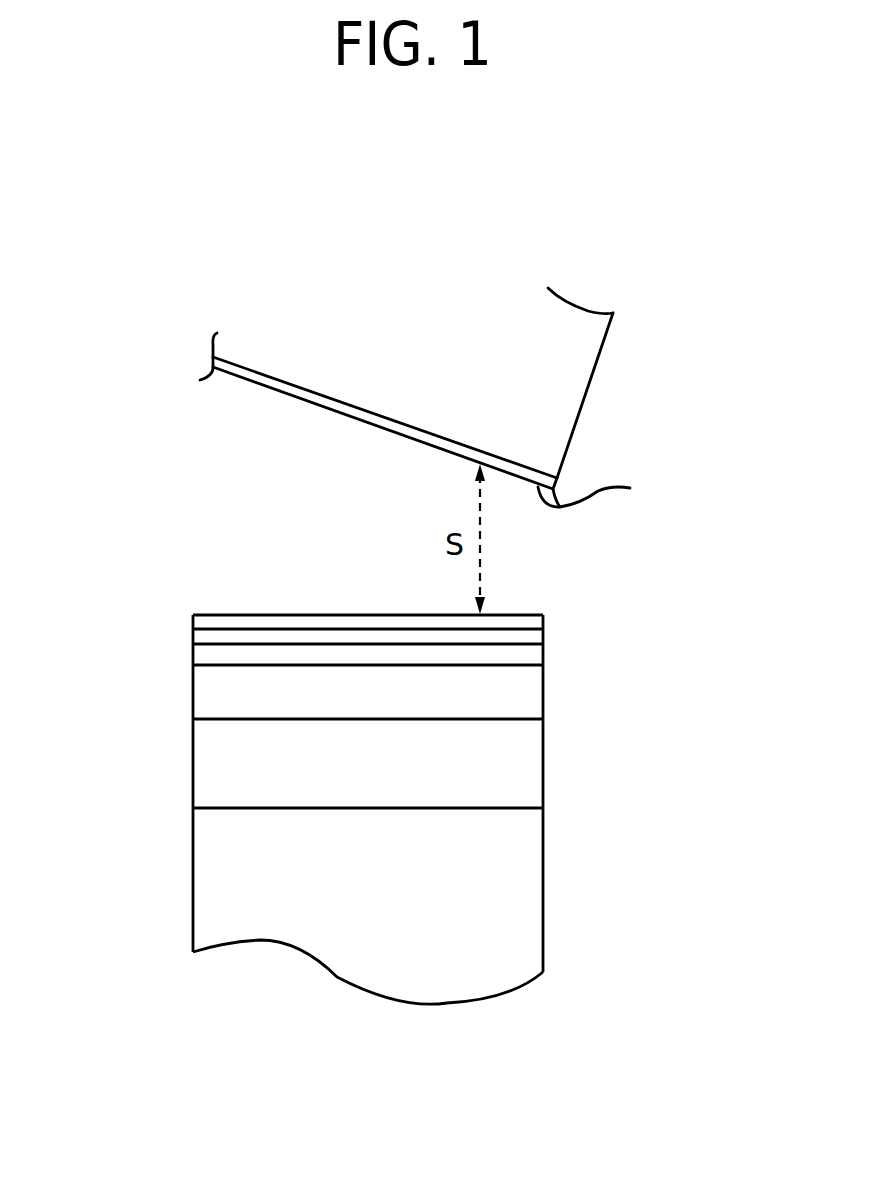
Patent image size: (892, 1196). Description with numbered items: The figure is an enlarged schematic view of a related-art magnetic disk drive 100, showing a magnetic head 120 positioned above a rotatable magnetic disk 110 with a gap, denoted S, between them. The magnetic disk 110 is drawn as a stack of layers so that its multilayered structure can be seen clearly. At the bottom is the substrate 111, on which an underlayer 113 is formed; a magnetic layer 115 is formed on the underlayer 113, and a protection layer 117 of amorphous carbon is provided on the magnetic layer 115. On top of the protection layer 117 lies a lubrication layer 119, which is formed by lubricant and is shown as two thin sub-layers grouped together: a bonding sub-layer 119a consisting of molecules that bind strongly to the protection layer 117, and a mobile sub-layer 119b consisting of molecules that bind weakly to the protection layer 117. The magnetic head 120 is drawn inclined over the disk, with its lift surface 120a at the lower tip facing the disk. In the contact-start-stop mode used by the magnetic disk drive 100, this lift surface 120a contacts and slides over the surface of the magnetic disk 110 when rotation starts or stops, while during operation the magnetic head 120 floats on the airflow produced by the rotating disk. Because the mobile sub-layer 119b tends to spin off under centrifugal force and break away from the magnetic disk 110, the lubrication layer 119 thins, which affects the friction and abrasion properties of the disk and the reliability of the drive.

The magnetic disk drive 100 is at (578, 211).
The magnetic disk 110 is at (420, 789).
The substrate 111 is at (529, 898).
The underlayer 113 is at (530, 767).
The magnetic layer 115 is at (530, 702).
The protection layer 117 is at (543, 657).
The lubrication layer 119 is at (489, 622).
The bonding sub-layer 119a is at (543, 637).
The mobile sub-layer 119b is at (543, 621).
The magnetic head 120 is at (597, 373).
The lift surface 120a is at (632, 493).